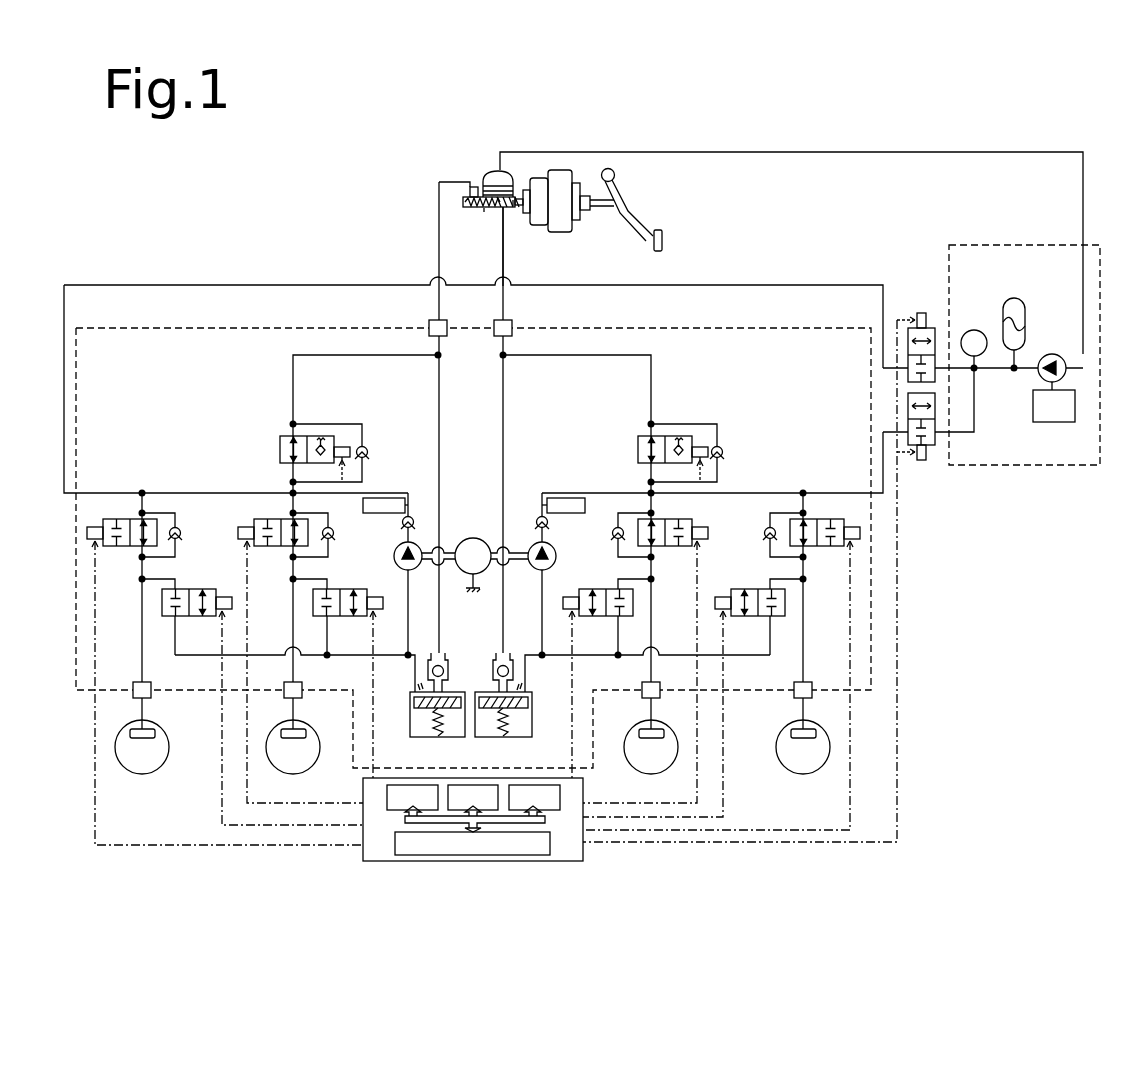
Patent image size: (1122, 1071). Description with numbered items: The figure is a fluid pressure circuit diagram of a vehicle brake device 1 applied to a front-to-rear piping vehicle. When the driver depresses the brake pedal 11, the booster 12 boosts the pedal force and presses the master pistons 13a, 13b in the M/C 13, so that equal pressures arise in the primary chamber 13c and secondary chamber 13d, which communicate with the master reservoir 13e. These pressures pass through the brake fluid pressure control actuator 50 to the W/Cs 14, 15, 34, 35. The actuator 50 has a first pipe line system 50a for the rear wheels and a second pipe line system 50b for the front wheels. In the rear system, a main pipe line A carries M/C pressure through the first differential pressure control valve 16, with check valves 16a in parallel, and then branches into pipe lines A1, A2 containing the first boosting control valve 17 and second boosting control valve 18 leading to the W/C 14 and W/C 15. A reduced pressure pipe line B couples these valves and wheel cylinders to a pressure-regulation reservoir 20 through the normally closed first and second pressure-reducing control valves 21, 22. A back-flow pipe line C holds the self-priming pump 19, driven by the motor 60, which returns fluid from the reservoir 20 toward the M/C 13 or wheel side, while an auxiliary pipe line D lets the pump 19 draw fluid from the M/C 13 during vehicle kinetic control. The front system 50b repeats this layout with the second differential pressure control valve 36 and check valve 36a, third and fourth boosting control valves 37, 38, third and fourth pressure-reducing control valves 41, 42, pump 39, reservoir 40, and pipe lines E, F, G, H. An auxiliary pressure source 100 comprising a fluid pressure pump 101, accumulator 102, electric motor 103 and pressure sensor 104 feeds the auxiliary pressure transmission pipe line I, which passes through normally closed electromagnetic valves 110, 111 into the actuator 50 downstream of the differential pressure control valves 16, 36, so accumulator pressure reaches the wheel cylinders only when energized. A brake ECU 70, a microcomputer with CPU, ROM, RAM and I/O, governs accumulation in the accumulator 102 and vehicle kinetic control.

The brake device 1 is at (320, 233).
The brake pedal 11 is at (623, 196).
The booster 12 is at (575, 226).
The M/C 13 is at (460, 201).
The master piston 13a is at (490, 209).
The master piston 13b is at (522, 212).
The primary chamber 13c is at (470, 206).
The secondary chamber 13d is at (506, 209).
The master reservoir 13e is at (484, 178).
The W/C 14 is at (130, 734).
The W/C 15 is at (281, 734).
The first differential pressure control valve 16 is at (278, 452).
The check valve 16a is at (368, 445).
The first boosting control valve 17 is at (130, 519).
The second boosting control valve 18 is at (282, 519).
The self-priming pump 19 is at (394, 556).
The pressure-regulation reservoir 20 is at (412, 704).
The first pressure-reducing control valve 21 is at (180, 589).
The second pressure-reducing control valve 22 is at (333, 589).
The W/C 34 is at (829, 728).
The W/C 35 is at (677, 728).
The second differential pressure control valve 36 is at (636, 452).
The check valve 36a is at (724, 449).
The third boosting control valve 37 is at (814, 519).
The fourth boosting control valve 38 is at (662, 519).
The pump 39 is at (556, 556).
The reservoir 40 is at (532, 704).
The third pressure-reducing control valve 41 is at (762, 589).
The fourth pressure-reducing control valve 42 is at (610, 589).
The brake fluid pressure control actuator 50 is at (812, 327).
The first pipe line system 50a is at (176, 385).
The second pipe line system 50b is at (736, 378).
The motor 60 is at (470, 538).
The brake ECU 70 is at (585, 782).
The auxiliary pressure source 100 is at (1078, 468).
The fluid pressure pump 101 is at (1056, 354).
The accumulator 102 is at (1014, 298).
The electric motor 103 is at (1032, 405).
The pressure sensor 104 is at (974, 330).
The electromagnetic valve 110 is at (927, 313).
The electromagnetic valve 111 is at (930, 462).
The pipe line A is at (306, 357).
The pipe line A1 is at (140, 632).
The pipe line A2 is at (291, 624).
The pipe line B is at (338, 658).
The pipe line C is at (380, 496).
The pipe line D is at (440, 378).
The pipe line E is at (646, 357).
The pipe line F is at (605, 659).
The pipe line G is at (570, 496).
The pipe line H is at (500, 378).
The auxiliary pressure transmission pipe line I is at (977, 383).